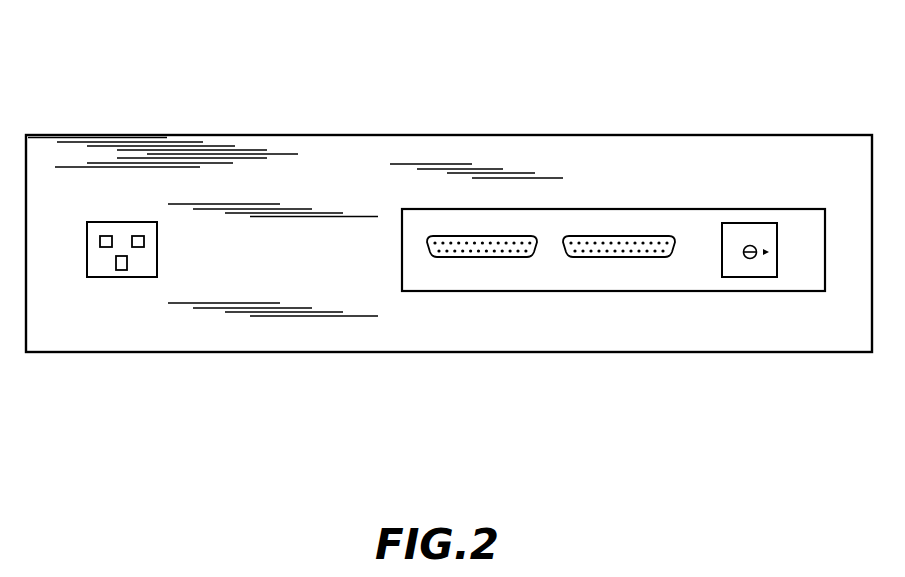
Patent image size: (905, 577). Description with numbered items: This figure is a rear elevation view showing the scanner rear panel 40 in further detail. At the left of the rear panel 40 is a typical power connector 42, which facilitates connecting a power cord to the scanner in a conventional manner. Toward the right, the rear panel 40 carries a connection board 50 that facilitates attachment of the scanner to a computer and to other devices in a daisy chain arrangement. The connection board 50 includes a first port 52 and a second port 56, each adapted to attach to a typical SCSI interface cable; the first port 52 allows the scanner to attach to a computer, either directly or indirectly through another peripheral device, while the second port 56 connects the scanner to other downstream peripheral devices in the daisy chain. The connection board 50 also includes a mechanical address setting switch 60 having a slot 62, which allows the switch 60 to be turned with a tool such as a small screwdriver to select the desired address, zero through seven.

The rear panel 40 is at (258, 57).
The power connector 42 is at (122, 277).
The connection board 50 is at (613, 198).
The first port 52 is at (618, 257).
The second port 56 is at (485, 257).
The address setting switch 60 is at (749, 208).
The slot 62 is at (750, 278).